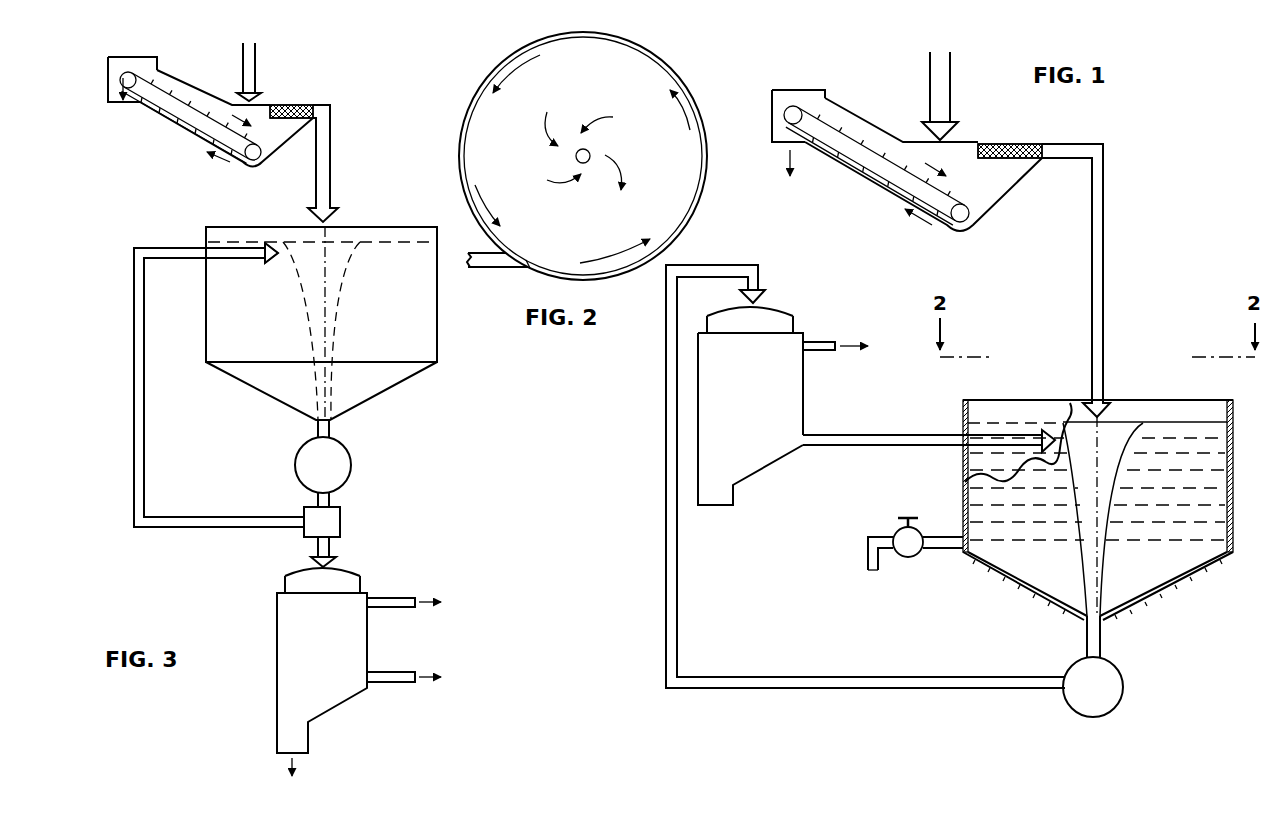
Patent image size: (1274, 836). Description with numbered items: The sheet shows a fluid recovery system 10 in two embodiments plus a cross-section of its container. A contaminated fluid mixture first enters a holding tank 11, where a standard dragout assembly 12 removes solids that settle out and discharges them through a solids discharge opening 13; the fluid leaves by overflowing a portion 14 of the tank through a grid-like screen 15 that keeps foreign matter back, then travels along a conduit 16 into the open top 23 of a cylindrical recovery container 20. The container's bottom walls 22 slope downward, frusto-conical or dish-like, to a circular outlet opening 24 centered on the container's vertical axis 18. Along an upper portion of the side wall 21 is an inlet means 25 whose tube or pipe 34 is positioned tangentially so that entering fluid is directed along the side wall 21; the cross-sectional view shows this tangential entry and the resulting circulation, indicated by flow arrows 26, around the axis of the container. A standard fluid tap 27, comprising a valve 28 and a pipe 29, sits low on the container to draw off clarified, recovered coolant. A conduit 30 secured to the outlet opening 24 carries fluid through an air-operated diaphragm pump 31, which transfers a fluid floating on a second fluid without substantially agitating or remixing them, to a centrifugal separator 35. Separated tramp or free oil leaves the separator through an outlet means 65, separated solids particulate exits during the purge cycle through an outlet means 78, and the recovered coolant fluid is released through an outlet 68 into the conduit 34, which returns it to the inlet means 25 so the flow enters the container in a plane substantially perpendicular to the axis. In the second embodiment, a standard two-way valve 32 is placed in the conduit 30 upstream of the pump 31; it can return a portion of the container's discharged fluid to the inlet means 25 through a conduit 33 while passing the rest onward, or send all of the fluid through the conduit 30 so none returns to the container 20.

In FIG. 3, the recovery system 10 is at (375, 125).
In FIG. 1, the recovery system 10 is at (1162, 204).
In FIG. 3, the holding tank 11 is at (227, 105).
In FIG. 1, the holding tank 11 is at (898, 139).
In FIG. 3, the dragout assembly 12 is at (185, 128).
In FIG. 1, the dragout assembly 12 is at (865, 168).
In FIG. 3, the solids discharge opening 13 is at (112, 104).
In FIG. 1, the solids discharge opening 13 is at (777, 144).
In FIG. 3, the overflow portion 14 is at (283, 102).
In FIG. 1, the overflow portion 14 is at (987, 142).
In FIG. 3, the grid-like screen 15 is at (302, 105).
In FIG. 1, the grid-like screen 15 is at (1021, 146).
In FIG. 3, the conduit 16 is at (333, 160).
In FIG. 1, the conduit 16 is at (1105, 242).
In FIG. 3, the vertical axis 18 is at (318, 276).
In FIG. 1, the vertical axis 18 is at (1100, 510).
In FIG. 3, the recovery container 20 is at (296, 218).
In FIG. 1, the recovery container 20 is at (1193, 399).
In FIG. 3, the side wall 21 is at (438, 308).
In FIG. 2, the side wall 21 is at (686, 84).
In FIG. 1, the side wall 21 is at (1233, 470).
In FIG. 3, the sloping walls 22 is at (385, 390).
In FIG. 1, the sloping walls 22 is at (1166, 596).
In FIG. 3, the open top 23 is at (370, 226).
In FIG. 1, the open top 23 is at (1136, 399).
In FIG. 3, the outlet opening 24 is at (316, 423).
In FIG. 1, the outlet opening 24 is at (1106, 624).
In FIG. 3, the inlet means 25 is at (207, 254).
In FIG. 2, the inlet means 25 is at (521, 276).
In FIG. 1, the inlet means 25 is at (989, 449).
In FIG. 2, the rotational flow arrows 26 is at (516, 68).
In FIG. 1, the fluid tap 27 is at (866, 581).
In FIG. 1, the valve 28 is at (894, 534).
In FIG. 1, the pipe 29 is at (937, 550).
In FIG. 3, the conduit 30 is at (331, 431).
In FIG. 1, the conduit 30 is at (666, 445).
In FIG. 3, the pump 31 is at (352, 465).
In FIG. 1, the pump 31 is at (1078, 702).
In FIG. 3, the two-way valve 32 is at (340, 521).
In FIG. 3, the return conduit 33 is at (134, 440).
In FIG. 2, the tangential pipe 34 is at (502, 268).
In FIG. 1, the tangential pipe 34 is at (880, 446).
In FIG. 3, the centrifugal separator 35 is at (276, 684).
In FIG. 1, the centrifugal separator 35 is at (793, 302).
In FIG. 3, the oil outlet means 65 is at (416, 600).
In FIG. 1, the oil outlet means 65 is at (837, 342).
In FIG. 3, the coolant outlet 68 is at (416, 675).
In FIG. 1, the coolant outlet 68 is at (806, 434).
In FIG. 3, the solids outlet means 78 is at (282, 755).
In FIG. 1, the solids outlet means 78 is at (702, 510).